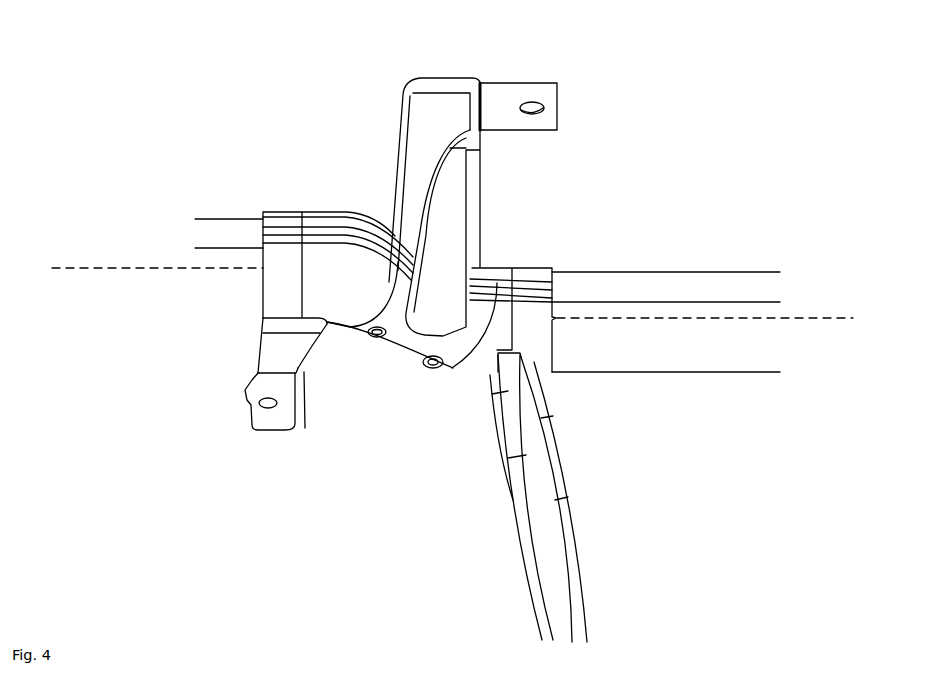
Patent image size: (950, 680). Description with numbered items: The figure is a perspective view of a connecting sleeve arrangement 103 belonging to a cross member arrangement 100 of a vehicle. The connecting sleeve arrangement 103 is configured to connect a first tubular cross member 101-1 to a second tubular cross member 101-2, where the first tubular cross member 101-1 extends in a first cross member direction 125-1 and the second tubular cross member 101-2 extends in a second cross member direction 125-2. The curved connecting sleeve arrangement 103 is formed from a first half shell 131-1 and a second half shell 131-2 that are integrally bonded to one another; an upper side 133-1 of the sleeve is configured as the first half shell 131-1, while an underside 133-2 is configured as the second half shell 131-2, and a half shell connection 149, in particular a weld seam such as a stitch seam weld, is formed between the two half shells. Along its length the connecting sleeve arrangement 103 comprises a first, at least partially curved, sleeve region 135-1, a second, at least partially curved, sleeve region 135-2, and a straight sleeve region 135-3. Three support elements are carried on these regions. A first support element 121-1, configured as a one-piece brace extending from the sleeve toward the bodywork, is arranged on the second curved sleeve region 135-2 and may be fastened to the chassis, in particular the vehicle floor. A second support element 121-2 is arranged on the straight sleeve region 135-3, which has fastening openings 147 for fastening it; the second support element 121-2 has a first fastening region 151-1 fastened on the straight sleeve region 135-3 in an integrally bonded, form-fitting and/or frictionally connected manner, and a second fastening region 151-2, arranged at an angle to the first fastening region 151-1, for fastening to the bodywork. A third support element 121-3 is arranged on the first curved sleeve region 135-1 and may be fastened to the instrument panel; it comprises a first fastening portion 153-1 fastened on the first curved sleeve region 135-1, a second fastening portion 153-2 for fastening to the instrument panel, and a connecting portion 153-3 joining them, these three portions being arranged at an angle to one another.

The cross member arrangement 100 is at (168, 118).
The first tubular cross member 101-1 is at (217, 220).
The second tubular cross member 101-2 is at (683, 270).
The connecting sleeve arrangement 103 is at (363, 233).
The first support element 121-1 is at (562, 552).
The second support element 121-2 is at (432, 100).
The third support element 121-3 is at (262, 422).
The first cross member direction 125-1 is at (85, 268).
The second cross member direction 125-2 is at (833, 318).
The first half shell 131-1 is at (325, 225).
The second half shell 131-2 is at (480, 362).
The upper side 133-1 is at (357, 220).
The underside 133-2 is at (496, 369).
The first, at least partially curved, sleeve region 135-1 is at (277, 280).
The second, at least partially curved, sleeve region 135-2 is at (507, 322).
The straight sleeve region 135-3 is at (410, 342).
The fastening openings 147 is at (373, 337).
The half shell connection 149 is at (269, 245).
The first fastening region 151-1 is at (455, 233).
The second fastening region 151-2 is at (530, 92).
The first fastening portion 153-1 is at (287, 328).
The second fastening portion 153-2 is at (277, 383).
The connecting portion 153-3 is at (282, 348).